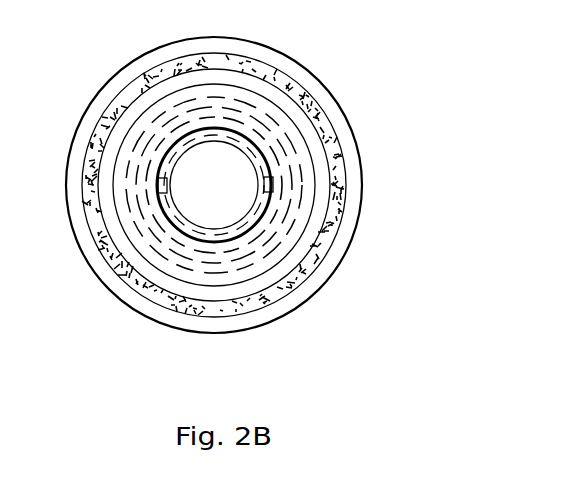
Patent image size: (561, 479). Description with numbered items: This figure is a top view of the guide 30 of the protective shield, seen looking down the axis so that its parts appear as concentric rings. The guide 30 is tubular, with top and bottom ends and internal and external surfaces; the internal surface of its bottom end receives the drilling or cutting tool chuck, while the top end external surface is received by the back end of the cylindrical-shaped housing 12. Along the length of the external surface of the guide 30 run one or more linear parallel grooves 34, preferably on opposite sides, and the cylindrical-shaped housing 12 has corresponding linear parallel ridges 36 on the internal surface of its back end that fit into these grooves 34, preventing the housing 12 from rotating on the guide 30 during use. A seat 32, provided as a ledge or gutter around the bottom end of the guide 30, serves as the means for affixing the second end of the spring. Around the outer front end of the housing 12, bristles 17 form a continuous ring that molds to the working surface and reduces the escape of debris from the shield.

The cylindrical-shaped housing 12 is at (338, 105).
The guide 30 is at (307, 82).
The bristles 17 is at (113, 102).
The seat 32 is at (263, 252).
The grooves 34 is at (268, 182).
The ridges 36 is at (273, 186).